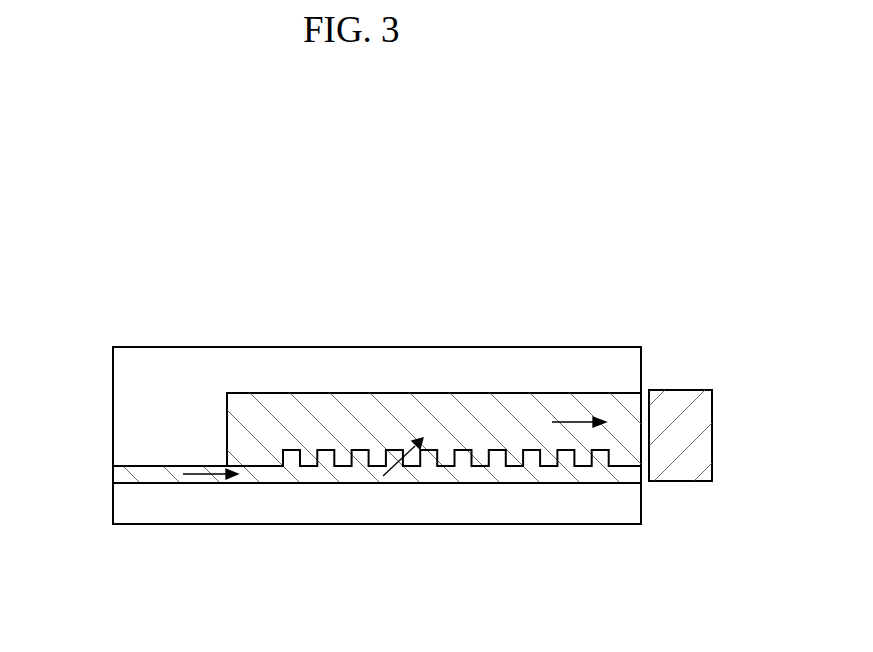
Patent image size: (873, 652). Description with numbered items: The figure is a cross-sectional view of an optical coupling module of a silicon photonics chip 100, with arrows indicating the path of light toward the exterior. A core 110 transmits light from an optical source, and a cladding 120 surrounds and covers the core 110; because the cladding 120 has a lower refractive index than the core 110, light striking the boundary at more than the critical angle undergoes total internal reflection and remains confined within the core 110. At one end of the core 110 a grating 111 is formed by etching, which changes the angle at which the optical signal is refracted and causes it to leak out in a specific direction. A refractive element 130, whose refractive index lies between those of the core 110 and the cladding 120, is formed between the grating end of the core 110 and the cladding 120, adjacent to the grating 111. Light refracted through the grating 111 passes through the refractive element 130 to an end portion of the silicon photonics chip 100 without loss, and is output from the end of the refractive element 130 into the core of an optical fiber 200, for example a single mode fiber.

The silicon photonics chip 100 is at (387, 438).
The core 110 is at (335, 506).
The grating 111 is at (567, 457).
The cladding 120 is at (250, 357).
The refractive element 130 is at (503, 403).
The optical fiber 200 is at (705, 437).